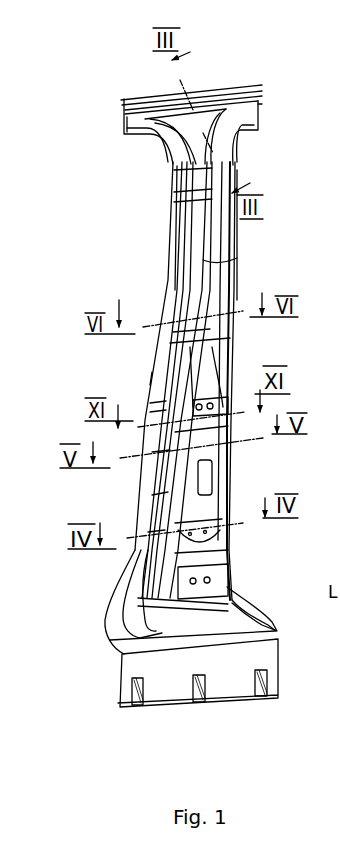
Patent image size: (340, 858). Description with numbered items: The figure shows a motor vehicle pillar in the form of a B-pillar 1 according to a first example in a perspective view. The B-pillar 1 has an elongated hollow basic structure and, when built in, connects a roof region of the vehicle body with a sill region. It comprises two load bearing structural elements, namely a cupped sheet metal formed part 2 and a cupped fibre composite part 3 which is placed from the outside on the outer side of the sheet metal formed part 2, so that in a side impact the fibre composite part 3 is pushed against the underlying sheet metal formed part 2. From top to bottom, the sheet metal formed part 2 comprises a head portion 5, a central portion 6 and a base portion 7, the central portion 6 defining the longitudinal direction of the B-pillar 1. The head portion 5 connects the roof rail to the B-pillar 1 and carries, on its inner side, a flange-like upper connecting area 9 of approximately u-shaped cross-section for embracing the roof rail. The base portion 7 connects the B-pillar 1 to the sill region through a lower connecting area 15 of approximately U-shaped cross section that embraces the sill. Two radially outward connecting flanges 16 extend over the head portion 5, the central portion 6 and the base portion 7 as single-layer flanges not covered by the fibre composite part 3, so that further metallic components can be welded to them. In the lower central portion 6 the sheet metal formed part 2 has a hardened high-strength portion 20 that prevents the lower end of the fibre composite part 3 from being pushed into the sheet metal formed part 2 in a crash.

The B-pillar 1 is at (260, 84).
The sheet metal formed part 2 is at (140, 95).
The fibre composite part 3 is at (202, 260).
The head portion 5 is at (124, 119).
The central portion 6 is at (150, 372).
The base portion 7 is at (110, 640).
The upper connecting area 9 is at (260, 112).
The lower connecting area 15 is at (123, 674).
The connecting flanges 16 is at (175, 268).
The hardened high-strength portion 20 is at (210, 553).